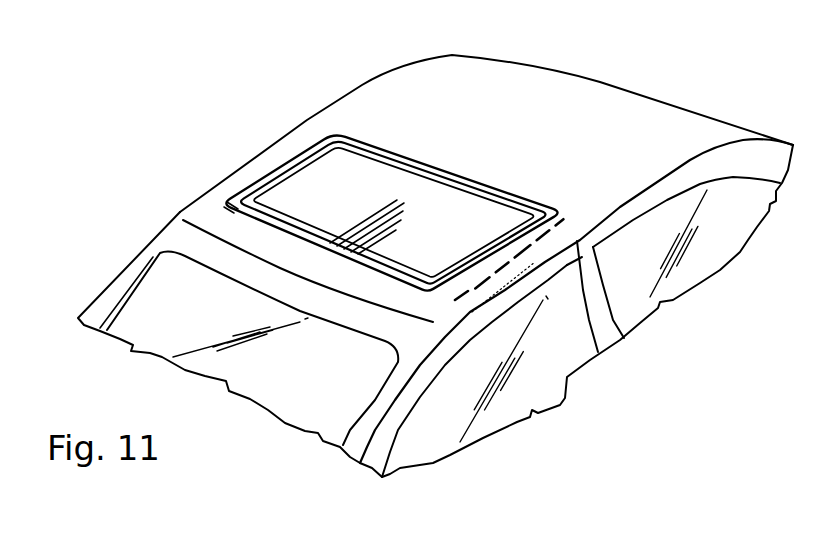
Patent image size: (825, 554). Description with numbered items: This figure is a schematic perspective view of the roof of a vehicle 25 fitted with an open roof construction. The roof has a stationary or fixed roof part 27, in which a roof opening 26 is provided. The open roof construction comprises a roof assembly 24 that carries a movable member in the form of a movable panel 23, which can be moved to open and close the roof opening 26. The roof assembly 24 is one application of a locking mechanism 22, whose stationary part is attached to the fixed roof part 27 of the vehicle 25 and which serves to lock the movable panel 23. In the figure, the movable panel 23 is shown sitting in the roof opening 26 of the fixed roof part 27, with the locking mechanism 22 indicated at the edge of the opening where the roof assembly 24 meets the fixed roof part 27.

The locking mechanism 22 is at (507, 262).
The movable panel 23 is at (300, 170).
The roof assembly 24 is at (198, 194).
The vehicle 25 is at (713, 116).
The roof opening 26 is at (378, 135).
The fixed roof part 27 is at (564, 100).